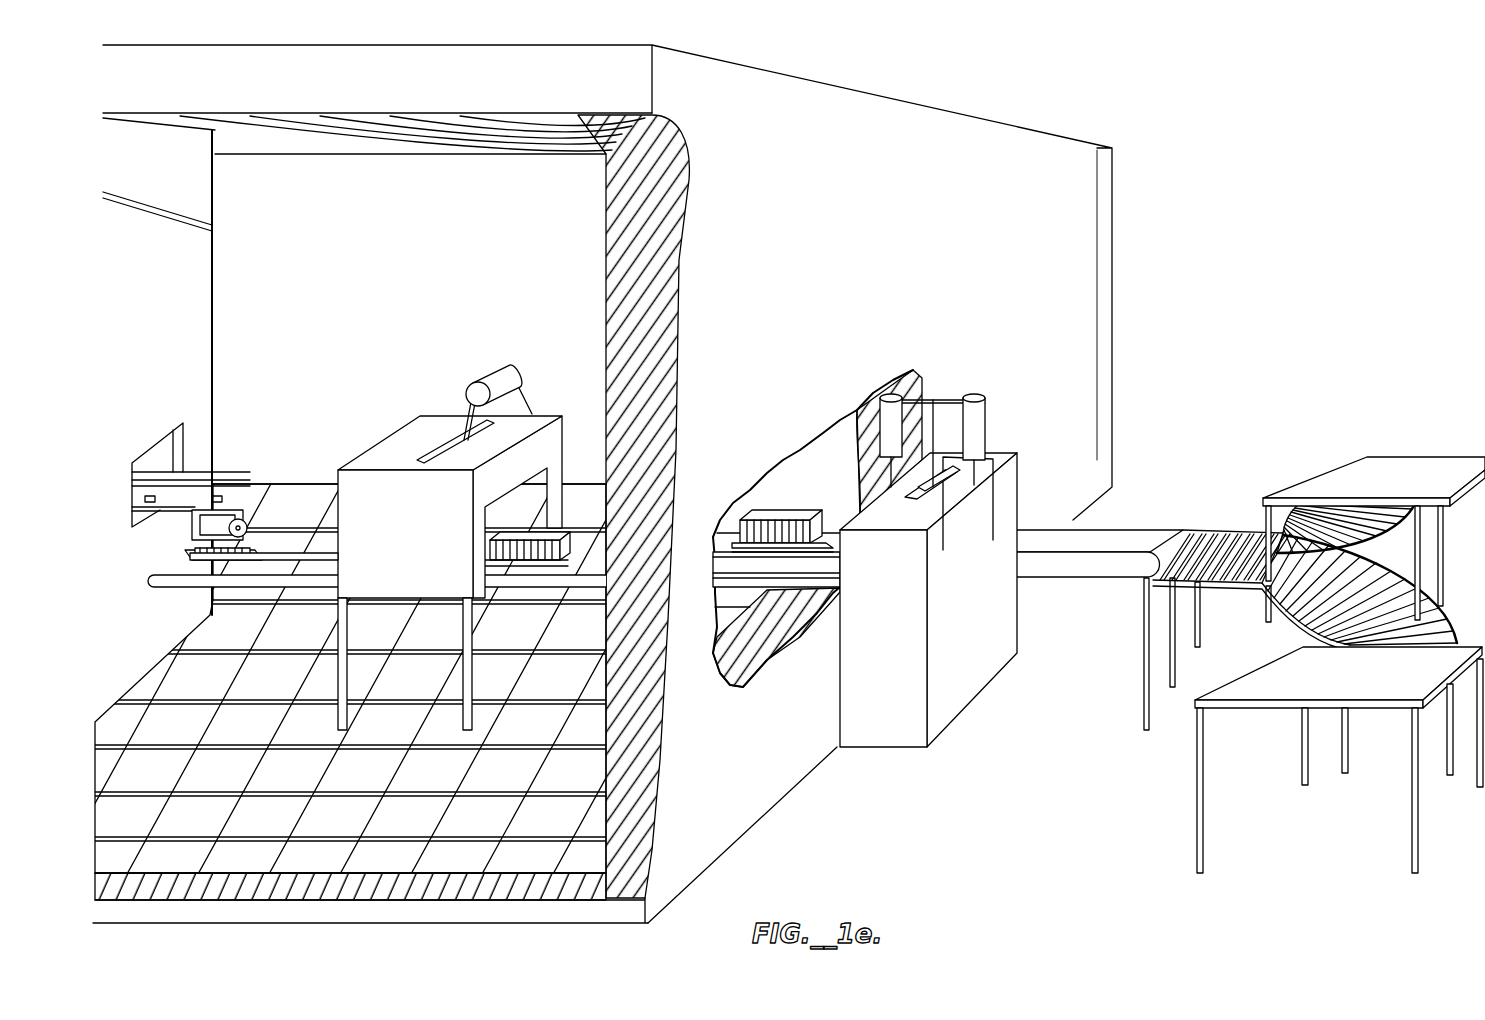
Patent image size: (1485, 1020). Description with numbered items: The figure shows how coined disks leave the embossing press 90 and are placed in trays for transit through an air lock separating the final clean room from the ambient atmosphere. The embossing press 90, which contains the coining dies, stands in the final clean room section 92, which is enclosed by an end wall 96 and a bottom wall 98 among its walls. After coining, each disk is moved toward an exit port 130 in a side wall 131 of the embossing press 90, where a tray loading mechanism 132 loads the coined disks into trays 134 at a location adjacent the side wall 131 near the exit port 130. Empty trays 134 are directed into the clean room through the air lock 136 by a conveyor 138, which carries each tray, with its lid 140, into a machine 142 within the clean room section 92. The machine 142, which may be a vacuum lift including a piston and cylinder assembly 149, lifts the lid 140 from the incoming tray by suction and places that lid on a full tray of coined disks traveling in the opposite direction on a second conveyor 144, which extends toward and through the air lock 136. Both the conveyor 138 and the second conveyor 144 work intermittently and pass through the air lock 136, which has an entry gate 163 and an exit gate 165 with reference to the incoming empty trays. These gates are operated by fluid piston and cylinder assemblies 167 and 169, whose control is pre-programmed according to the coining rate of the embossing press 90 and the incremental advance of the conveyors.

The embossing press 90 is at (222, 351).
The final clean room section 92 is at (607, 282).
The end wall 96 is at (606, 290).
The bottom wall 98 is at (380, 925).
The exit port 130 is at (165, 452).
The side wall 131 is at (190, 312).
The tray loading mechanism 132 is at (253, 493).
The trays 134 is at (250, 578).
The air lock 136 is at (1028, 642).
The conveyor 138 is at (287, 538).
The lid 140 is at (565, 540).
The machine 142 is at (560, 441).
The second conveyor 144 is at (293, 568).
The piston and cylinder assembly 149 is at (492, 378).
The entry gate 163 is at (1005, 503).
The exit gate 165 is at (877, 497).
The fluid piston and cylinder assembly 167 is at (980, 438).
The fluid piston and cylinder assembly 169 is at (888, 425).